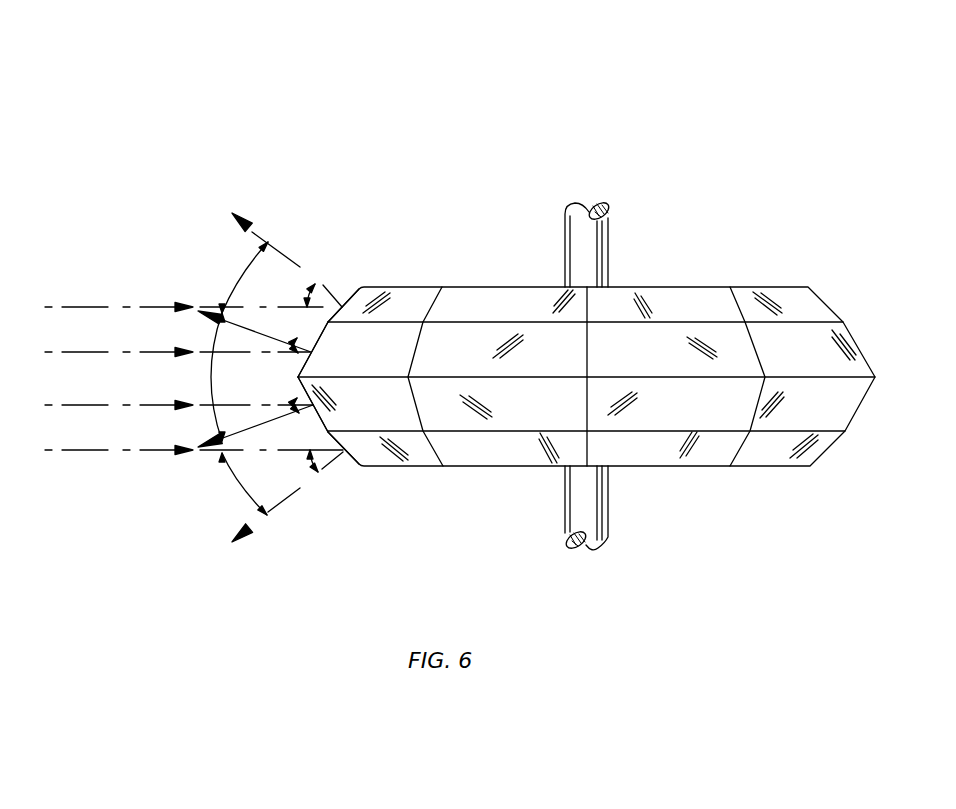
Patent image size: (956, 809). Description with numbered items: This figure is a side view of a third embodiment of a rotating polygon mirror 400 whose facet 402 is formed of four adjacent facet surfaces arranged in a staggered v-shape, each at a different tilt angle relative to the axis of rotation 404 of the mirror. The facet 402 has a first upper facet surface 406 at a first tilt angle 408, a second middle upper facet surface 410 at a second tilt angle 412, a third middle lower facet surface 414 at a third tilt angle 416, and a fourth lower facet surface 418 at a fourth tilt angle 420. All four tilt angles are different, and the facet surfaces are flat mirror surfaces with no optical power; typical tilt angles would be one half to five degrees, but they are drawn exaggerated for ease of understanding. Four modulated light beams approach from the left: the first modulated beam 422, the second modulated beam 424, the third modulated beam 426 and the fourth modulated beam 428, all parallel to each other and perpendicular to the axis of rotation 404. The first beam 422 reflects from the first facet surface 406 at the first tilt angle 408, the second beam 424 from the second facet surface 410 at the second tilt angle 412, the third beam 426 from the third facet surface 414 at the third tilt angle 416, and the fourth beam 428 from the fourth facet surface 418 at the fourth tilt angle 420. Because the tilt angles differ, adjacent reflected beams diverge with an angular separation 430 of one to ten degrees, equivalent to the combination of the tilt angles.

The rotating polygon mirror 400 is at (684, 78).
The facet 402 is at (352, 222).
The axis of rotation 404 is at (602, 258).
The first upper facet surface 406 is at (350, 298).
The first tilt angle 408 is at (303, 286).
The second middle upper facet surface 410 is at (330, 327).
The second tilt angle 412 is at (292, 350).
The third middle lower facet surface 414 is at (325, 428).
The third tilt angle 416 is at (295, 399).
The fourth lower facet surface 418 is at (347, 458).
The fourth tilt angle 420 is at (302, 470).
The first modulated light beam 422 is at (148, 307).
The second modulated light beam 424 is at (148, 352).
The third modulated light beam 426 is at (148, 405).
The fourth modulated light beam 428 is at (148, 450).
The angular separation 430 is at (190, 380).